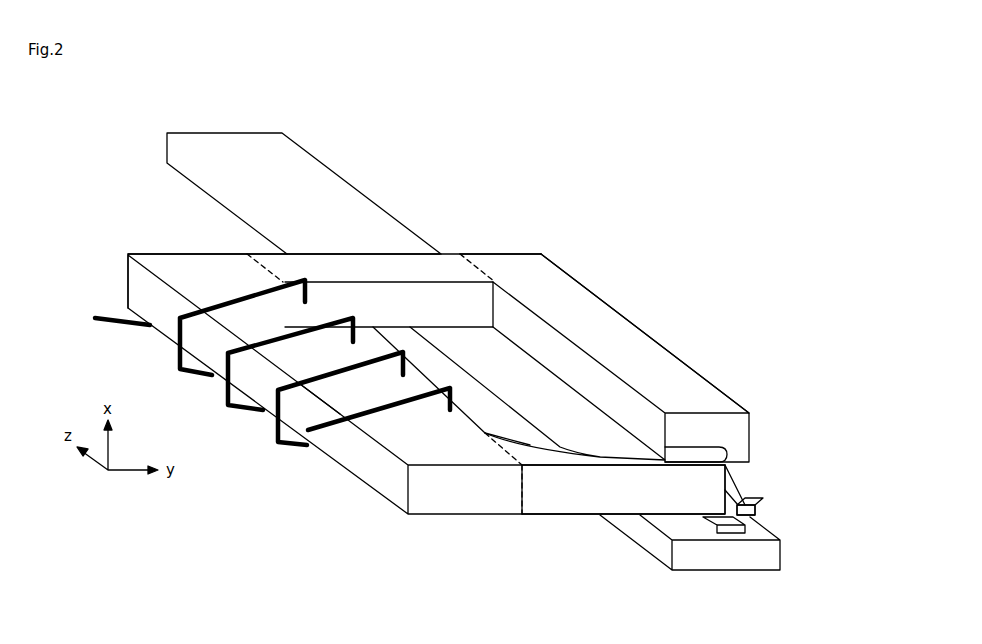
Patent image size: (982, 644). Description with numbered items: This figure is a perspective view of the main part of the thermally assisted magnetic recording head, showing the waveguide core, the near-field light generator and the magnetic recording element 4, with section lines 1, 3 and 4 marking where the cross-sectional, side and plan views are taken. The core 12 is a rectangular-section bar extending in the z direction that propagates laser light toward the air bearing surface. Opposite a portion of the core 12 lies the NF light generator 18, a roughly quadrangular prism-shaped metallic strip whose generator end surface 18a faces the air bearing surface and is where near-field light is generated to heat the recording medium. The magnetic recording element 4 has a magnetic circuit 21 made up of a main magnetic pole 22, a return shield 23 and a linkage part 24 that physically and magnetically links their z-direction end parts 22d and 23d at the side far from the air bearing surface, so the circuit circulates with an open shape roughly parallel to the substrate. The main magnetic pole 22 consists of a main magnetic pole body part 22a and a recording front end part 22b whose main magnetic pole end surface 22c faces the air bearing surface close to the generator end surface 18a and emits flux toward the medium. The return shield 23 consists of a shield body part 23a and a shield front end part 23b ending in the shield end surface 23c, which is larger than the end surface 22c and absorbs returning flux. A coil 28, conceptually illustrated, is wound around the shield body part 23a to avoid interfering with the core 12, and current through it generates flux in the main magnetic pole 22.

The line 1- 1 is at (430, 136).
The line 3- 3 is at (282, 573).
The magnetic recording element 4 is at (53, 275).
The core 12 is at (322, 177).
The NF light generator 18 is at (754, 508).
The generator end surface 18a is at (718, 535).
The magnetic circuit 21 is at (472, 238).
The main magnetic pole 22 is at (741, 326).
The main magnetic pole body part 22a is at (664, 364).
The recording front end part 22b is at (727, 465).
The main magnetic pole end surface 22c is at (753, 508).
The z-direction end part of the main magnetic pole 22d is at (510, 262).
The return shield 23 is at (394, 561).
The shield body part 23a is at (410, 456).
The shield front end part 23b is at (533, 453).
The shield end surface 23c is at (576, 494).
The z-direction end part of the return shield 23d is at (196, 263).
The linkage part 24 is at (353, 263).
The coil 28 is at (178, 366).